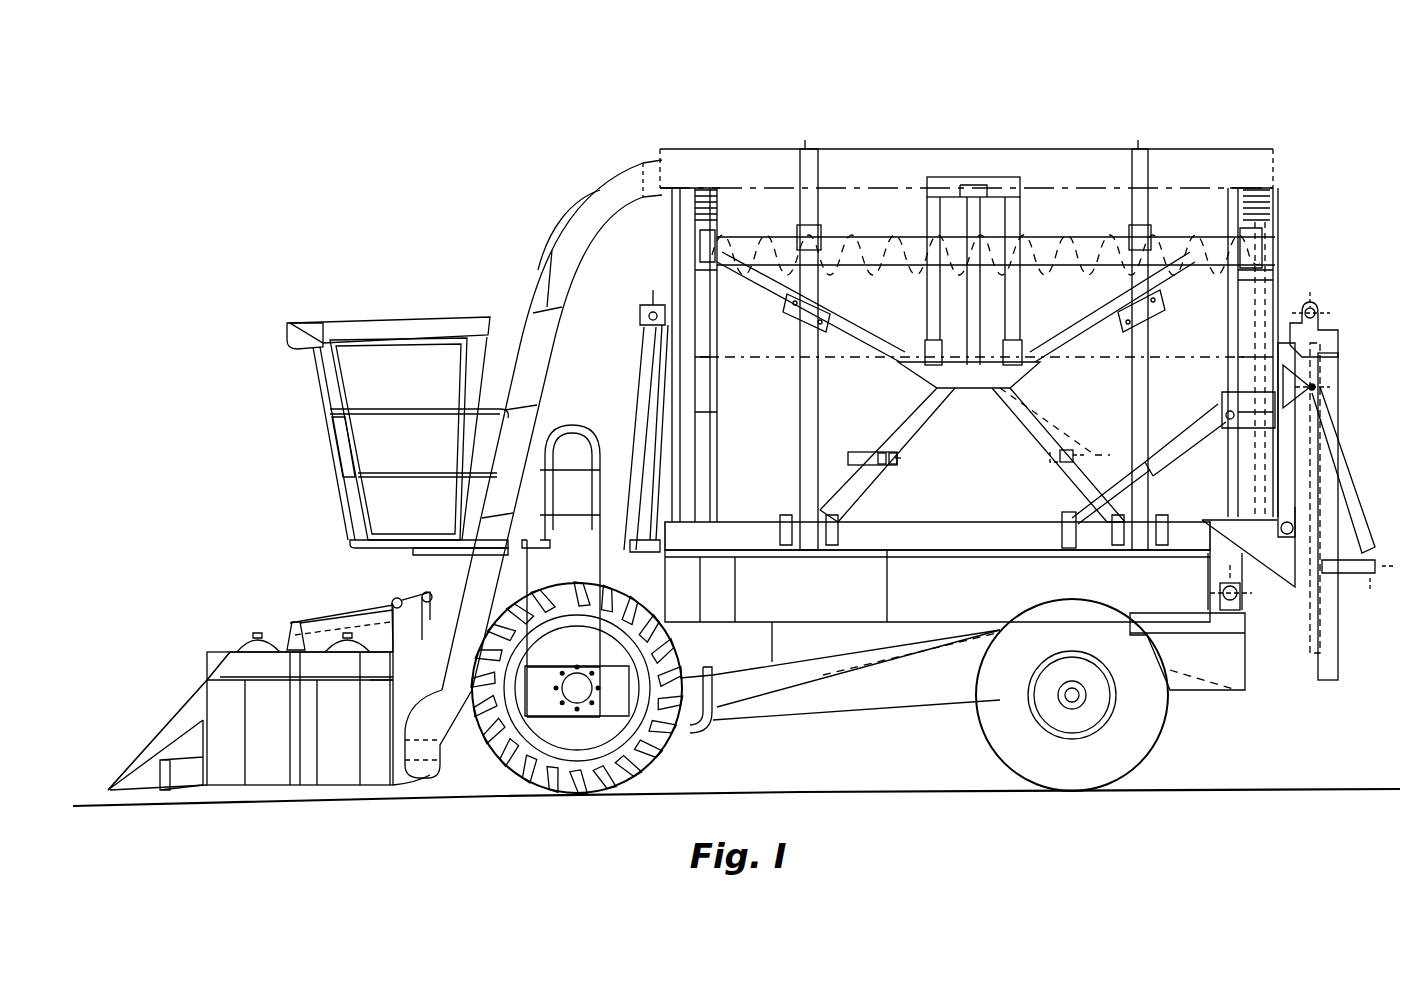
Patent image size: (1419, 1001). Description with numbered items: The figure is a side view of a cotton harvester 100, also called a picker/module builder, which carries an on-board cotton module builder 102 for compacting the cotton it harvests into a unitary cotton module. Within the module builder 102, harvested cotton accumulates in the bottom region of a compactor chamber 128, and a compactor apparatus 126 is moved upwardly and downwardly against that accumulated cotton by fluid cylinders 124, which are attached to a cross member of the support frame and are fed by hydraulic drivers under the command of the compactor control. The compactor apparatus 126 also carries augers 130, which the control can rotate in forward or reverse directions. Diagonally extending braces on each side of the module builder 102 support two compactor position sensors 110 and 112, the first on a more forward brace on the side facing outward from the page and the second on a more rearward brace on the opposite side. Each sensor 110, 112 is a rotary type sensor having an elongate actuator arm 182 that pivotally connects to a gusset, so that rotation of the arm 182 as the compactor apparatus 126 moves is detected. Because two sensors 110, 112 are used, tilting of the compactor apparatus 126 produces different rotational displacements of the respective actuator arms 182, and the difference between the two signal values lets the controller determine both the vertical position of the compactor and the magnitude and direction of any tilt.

The cotton harvester 100 is at (1333, 112).
The cotton module builder 102 is at (1275, 153).
The compactor position sensor 110 is at (878, 468).
The compactor position sensor 112 is at (1068, 463).
The fluid cylinder 124 is at (985, 212).
The compactor apparatus 126 is at (1285, 236).
The compactor chamber 128 is at (1207, 312).
The auger 130 is at (1163, 225).
The actuator arm 182 is at (1015, 409).